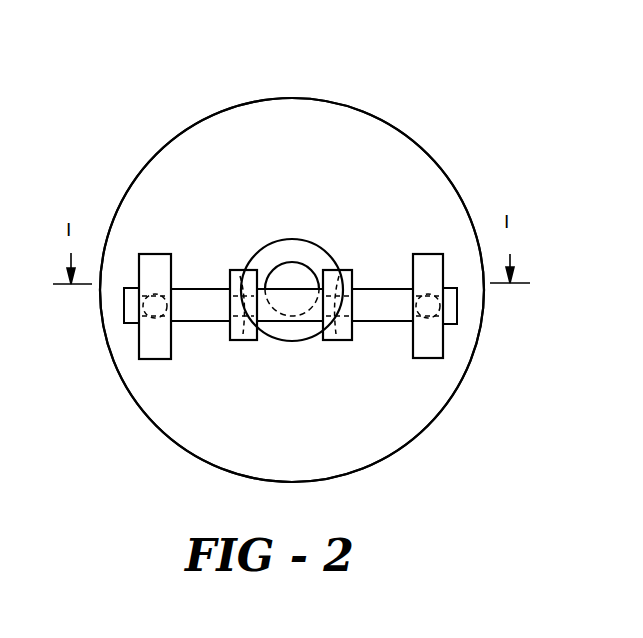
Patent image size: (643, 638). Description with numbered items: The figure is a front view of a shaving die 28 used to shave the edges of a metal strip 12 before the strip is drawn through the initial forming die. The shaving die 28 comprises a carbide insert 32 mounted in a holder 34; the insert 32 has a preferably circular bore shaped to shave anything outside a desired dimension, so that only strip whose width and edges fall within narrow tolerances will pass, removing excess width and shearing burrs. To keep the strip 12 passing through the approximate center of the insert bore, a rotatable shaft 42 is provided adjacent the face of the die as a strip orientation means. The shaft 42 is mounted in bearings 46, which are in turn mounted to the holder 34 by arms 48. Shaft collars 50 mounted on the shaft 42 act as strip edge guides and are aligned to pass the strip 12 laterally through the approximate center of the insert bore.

The strip 12 is at (283, 283).
The shaving die 28 is at (259, 78).
The carbide insert 32 is at (320, 256).
The holder 34 is at (183, 129).
The rotatable shaft 42 is at (390, 323).
The bearing 46 is at (131, 324).
The arm 48 is at (147, 253).
The shaft collar 50 is at (247, 341).